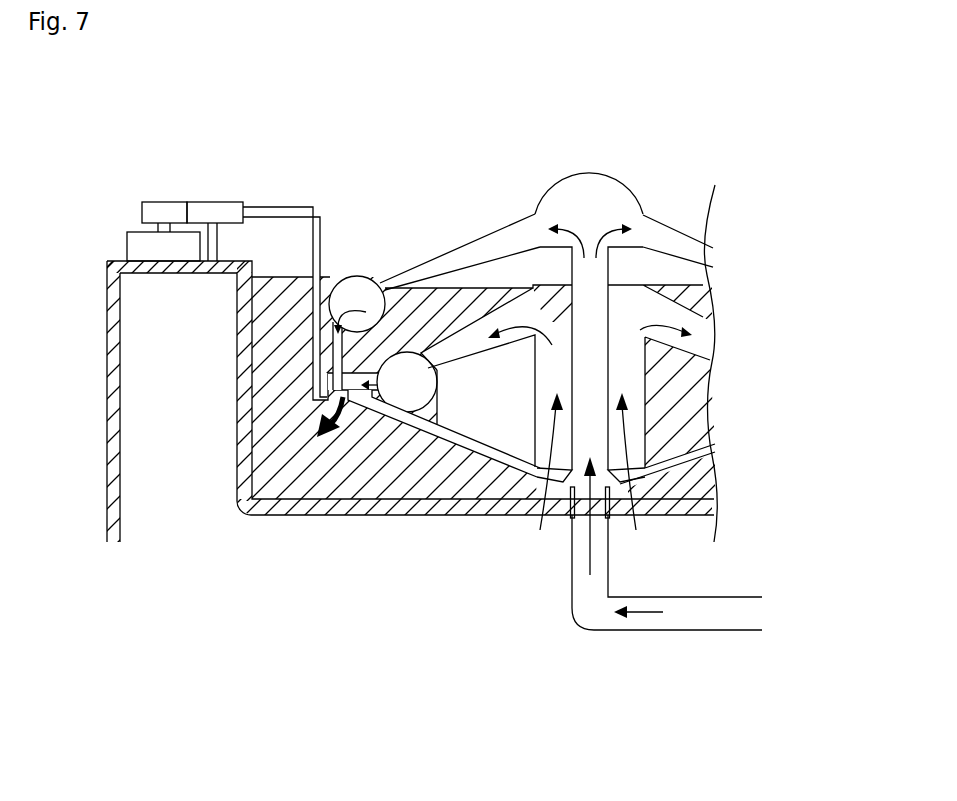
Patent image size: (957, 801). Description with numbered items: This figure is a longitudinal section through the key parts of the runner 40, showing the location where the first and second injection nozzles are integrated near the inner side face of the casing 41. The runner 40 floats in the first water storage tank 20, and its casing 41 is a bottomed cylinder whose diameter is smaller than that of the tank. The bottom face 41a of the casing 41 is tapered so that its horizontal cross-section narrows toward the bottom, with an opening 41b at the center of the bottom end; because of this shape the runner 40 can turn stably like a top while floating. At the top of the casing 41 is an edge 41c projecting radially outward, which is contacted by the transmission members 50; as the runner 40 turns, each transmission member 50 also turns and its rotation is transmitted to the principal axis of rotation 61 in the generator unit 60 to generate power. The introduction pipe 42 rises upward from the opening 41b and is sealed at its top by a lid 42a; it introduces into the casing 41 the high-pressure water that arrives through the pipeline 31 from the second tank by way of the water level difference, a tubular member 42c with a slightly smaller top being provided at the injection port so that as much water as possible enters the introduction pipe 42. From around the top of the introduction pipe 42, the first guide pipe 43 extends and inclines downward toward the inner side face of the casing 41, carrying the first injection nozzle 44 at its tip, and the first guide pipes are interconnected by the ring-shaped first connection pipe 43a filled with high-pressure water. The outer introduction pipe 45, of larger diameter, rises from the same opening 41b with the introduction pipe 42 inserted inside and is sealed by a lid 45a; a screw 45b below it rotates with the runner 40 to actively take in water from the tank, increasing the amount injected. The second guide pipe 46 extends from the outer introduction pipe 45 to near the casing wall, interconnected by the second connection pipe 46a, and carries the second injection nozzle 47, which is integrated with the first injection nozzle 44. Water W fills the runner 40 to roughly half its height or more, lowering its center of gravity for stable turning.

The first water storage tank 20 is at (242, 413).
The pipeline 31 is at (703, 613).
The runner 40 is at (652, 166).
The casing 41 is at (317, 308).
The bottom face 41a is at (368, 425).
The opening 41b is at (567, 515).
The edge 41c is at (287, 207).
The introduction pipe 42 is at (597, 323).
The lid 42a is at (553, 185).
The tubular member 42c is at (552, 502).
The first guide pipe 43 is at (683, 240).
The first connection pipe 43a is at (357, 292).
The first injection nozzle 44 is at (333, 348).
The outer introduction pipe 45 is at (528, 430).
The lid 45a is at (552, 284).
The screw 45b is at (629, 500).
The second guide pipe 46 is at (472, 345).
The second connection pipe 46a is at (415, 388).
The second injection nozzle 47 is at (343, 422).
The transmission member 50 is at (215, 208).
The generator unit 60 is at (163, 210).
The principal axis of rotation 61 is at (162, 223).
The water W is at (677, 403).